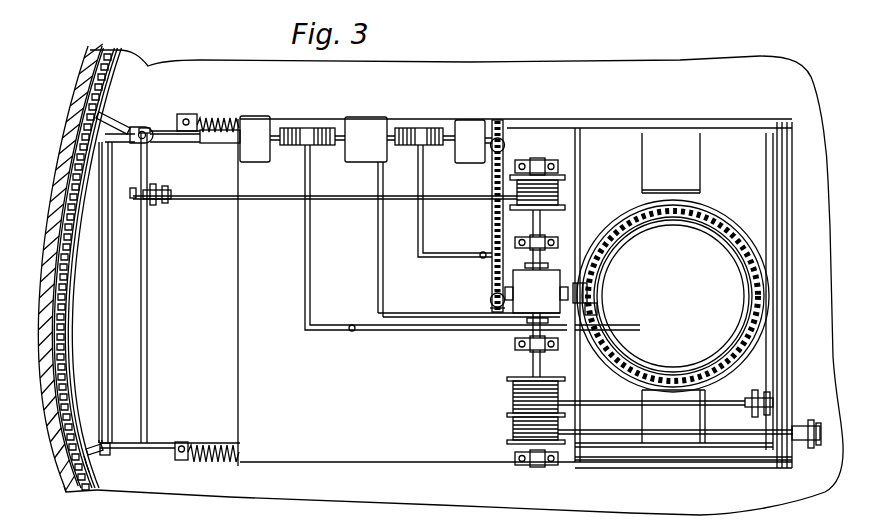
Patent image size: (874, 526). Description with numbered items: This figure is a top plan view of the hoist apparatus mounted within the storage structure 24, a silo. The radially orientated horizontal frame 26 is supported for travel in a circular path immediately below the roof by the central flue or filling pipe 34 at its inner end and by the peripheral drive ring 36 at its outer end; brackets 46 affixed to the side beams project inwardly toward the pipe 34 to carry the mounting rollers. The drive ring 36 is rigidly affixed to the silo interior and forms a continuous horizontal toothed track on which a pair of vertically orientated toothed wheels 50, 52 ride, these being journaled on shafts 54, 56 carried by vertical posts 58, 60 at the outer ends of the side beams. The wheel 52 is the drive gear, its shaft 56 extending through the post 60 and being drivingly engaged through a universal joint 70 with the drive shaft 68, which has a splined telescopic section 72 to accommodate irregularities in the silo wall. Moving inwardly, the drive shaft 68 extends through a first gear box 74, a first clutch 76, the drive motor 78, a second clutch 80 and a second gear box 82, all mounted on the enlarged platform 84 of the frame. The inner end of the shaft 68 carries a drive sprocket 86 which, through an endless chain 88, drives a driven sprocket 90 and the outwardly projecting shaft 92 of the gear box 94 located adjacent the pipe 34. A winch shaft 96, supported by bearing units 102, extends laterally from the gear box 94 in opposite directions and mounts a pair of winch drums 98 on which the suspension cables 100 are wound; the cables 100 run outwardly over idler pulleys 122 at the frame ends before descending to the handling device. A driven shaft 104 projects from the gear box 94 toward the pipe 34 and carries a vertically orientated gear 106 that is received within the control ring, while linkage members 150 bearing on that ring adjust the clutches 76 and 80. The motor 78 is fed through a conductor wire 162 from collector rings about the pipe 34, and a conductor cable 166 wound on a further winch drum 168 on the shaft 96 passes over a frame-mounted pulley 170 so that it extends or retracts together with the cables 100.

The storage structure 24 is at (47, 422).
The horizontal frame 26 is at (706, 118).
The central flue or filling pipe 34 is at (746, 279).
The peripheral drive ring 36 is at (110, 483).
The brackets 46 is at (657, 447).
The toothed wheel 50 is at (88, 458).
The drive gear 52 is at (90, 110).
The shaft 54 is at (82, 492).
The shaft 56 is at (105, 135).
The vertical post 58 is at (112, 444).
The vertical post 60 is at (108, 120).
The drive shaft 68 is at (219, 144).
The universal joint 70 is at (146, 126).
The telescopic section 72 is at (186, 141).
The first gear box 74 is at (250, 122).
The first clutch 76 is at (307, 120).
The drive motor 78 is at (362, 122).
The second clutch 80 is at (417, 120).
The second gear box 82 is at (464, 128).
The platform 84 is at (238, 328).
The drive sprocket 86 is at (505, 122).
The endless chain 88 is at (506, 157).
The driven sprocket 90 is at (493, 292).
The shaft 92 is at (492, 296).
The gear box 94 is at (560, 283).
The winch shaft 96 is at (545, 225).
The winch drums 98 is at (565, 182).
The suspension cables 100 is at (262, 194).
The bearing units 102 is at (540, 162).
The driven shaft 104 is at (598, 311).
The gear 106 is at (590, 292).
The idler pulleys 122 is at (162, 205).
The linkage members 150 is at (417, 240).
The conductor wire 162 is at (378, 290).
The conductor cable 166 is at (731, 436).
The winch drum 168 is at (512, 440).
The pulley 170 is at (810, 420).